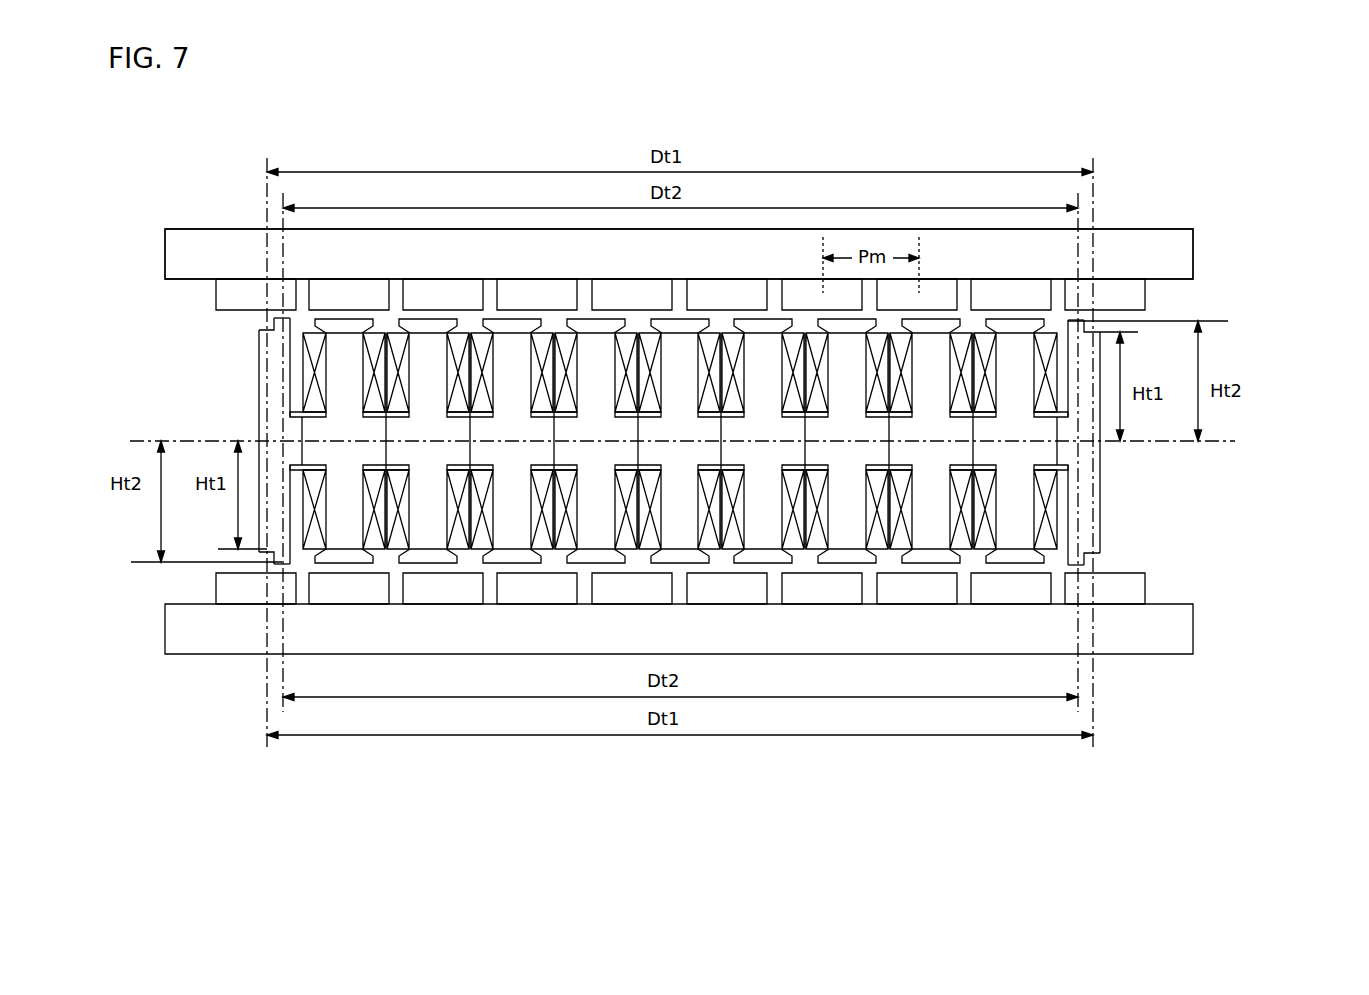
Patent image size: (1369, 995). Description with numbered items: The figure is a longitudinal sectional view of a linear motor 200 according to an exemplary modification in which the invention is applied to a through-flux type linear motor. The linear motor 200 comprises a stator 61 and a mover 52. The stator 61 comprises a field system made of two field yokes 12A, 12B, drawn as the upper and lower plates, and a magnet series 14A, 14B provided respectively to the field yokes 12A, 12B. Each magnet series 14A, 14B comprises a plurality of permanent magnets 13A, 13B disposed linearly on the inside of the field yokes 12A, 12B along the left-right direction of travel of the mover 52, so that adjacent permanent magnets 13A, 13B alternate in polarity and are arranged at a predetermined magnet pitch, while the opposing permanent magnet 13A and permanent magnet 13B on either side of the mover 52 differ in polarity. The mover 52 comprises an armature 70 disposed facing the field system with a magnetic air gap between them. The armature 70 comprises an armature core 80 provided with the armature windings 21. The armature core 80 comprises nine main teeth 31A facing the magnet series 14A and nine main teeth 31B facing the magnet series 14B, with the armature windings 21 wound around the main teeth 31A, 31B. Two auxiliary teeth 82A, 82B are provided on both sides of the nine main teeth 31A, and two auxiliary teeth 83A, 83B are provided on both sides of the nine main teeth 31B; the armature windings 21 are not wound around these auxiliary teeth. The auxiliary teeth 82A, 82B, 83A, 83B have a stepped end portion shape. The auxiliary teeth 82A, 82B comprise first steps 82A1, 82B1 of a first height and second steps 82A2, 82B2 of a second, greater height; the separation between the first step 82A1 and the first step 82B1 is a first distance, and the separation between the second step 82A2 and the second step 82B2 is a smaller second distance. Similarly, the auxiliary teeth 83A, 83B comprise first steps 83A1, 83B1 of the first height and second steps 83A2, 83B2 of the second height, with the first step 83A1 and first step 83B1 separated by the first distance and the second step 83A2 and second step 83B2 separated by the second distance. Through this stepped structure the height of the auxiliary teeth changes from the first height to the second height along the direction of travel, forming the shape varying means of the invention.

The linear motor 200 is at (232, 161).
The stator 61 is at (1353, 326).
The magnet series 14A is at (1173, 301).
The magnet series 14B is at (1189, 559).
The field yoke 12A is at (1175, 242).
The field yoke 12B is at (1173, 625).
The permanent magnet 13A is at (437, 289).
The permanent magnet 13B is at (433, 592).
The mover 52 is at (204, 426).
The armature 70 is at (245, 389).
The armature core 80 is at (1085, 457).
The armature windings 21 is at (708, 342).
The main teeth 31A is at (512, 336).
The main teeth 31B is at (508, 548).
The auxiliary tooth 82A is at (276, 354).
The first step 82A1 is at (274, 325).
The second step 82A2 is at (282, 318).
The auxiliary tooth 82B is at (1095, 362).
The first step 82B1 is at (1093, 330).
The second step 82B2 is at (1081, 320).
The auxiliary tooth 83A is at (264, 521).
The first step 83A1 is at (266, 554).
The second step 83A2 is at (277, 564).
The auxiliary tooth 83B is at (1097, 503).
The first step 83B1 is at (1092, 560).
The second step 83B2 is at (1070, 568).